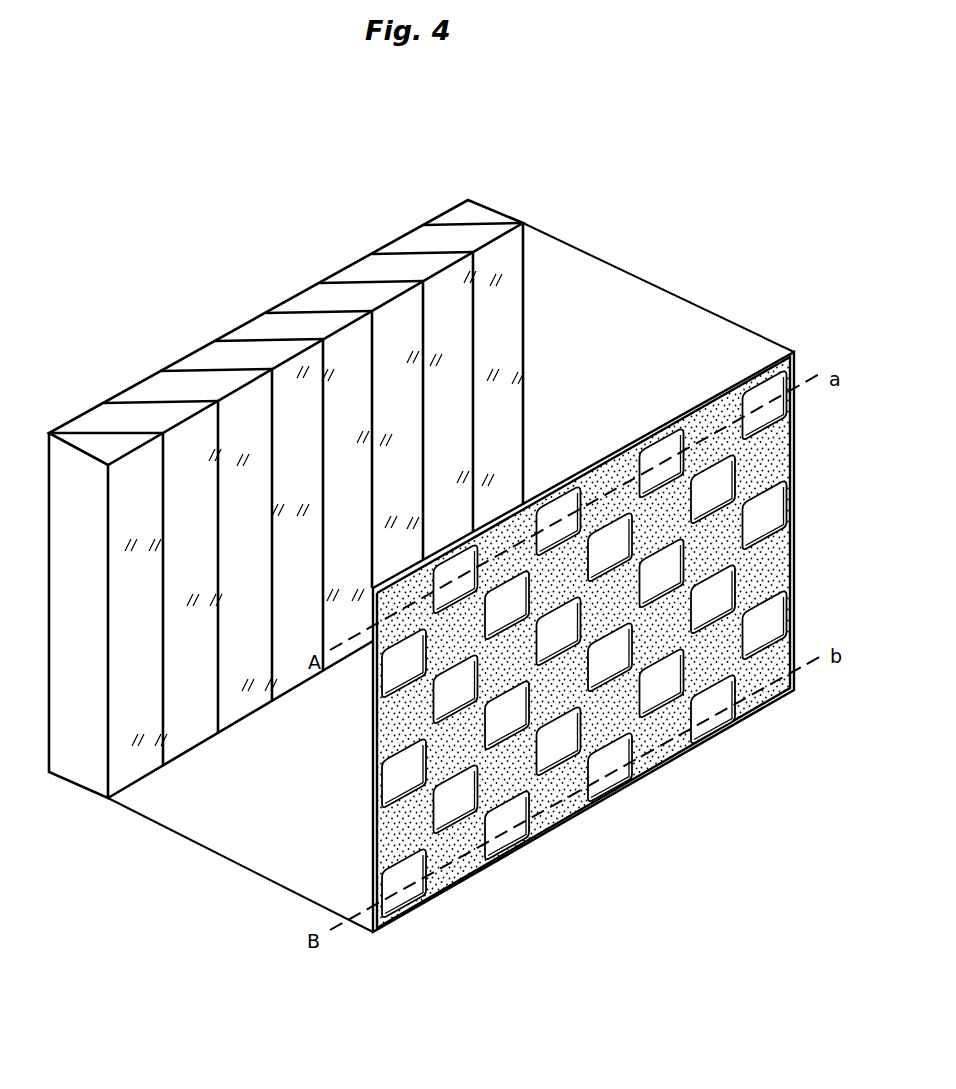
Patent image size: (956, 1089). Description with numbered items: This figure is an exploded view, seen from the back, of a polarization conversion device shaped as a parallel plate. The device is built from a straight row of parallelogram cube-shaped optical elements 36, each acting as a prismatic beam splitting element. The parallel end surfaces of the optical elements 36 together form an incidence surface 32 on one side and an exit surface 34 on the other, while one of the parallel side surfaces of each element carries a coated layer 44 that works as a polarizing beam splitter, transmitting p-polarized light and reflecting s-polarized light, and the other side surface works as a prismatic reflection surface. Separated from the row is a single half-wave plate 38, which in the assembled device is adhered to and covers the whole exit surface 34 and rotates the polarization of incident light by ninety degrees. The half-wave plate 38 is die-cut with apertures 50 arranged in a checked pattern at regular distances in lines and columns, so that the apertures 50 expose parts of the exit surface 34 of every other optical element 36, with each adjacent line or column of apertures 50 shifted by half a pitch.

The incidence surface 32 is at (293, 297).
The exit surface 34 is at (490, 324).
The parallelogram cube-shaped optical element 36 is at (150, 388).
The half-wave plate 38 is at (373, 750).
The coated layer 44 is at (122, 400).
The aperture 50 is at (770, 427).